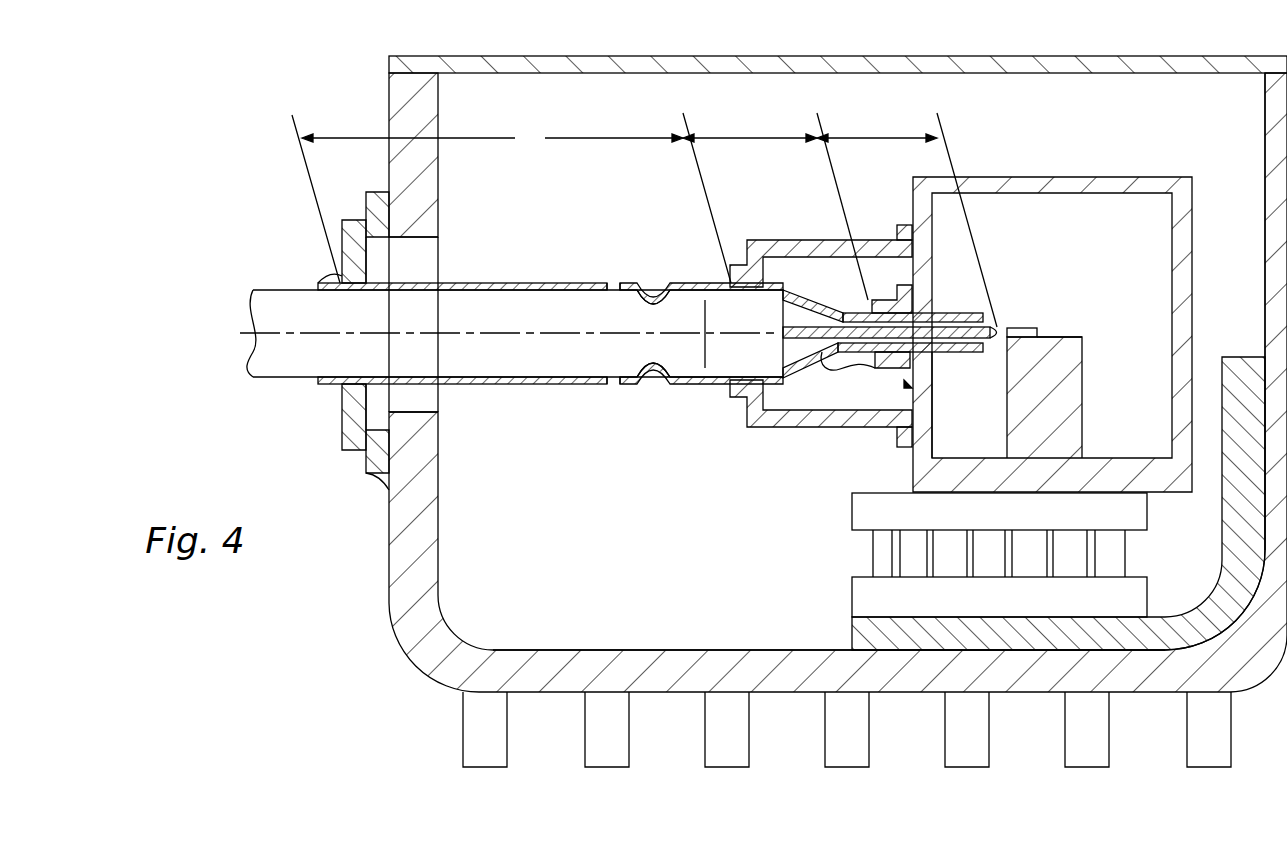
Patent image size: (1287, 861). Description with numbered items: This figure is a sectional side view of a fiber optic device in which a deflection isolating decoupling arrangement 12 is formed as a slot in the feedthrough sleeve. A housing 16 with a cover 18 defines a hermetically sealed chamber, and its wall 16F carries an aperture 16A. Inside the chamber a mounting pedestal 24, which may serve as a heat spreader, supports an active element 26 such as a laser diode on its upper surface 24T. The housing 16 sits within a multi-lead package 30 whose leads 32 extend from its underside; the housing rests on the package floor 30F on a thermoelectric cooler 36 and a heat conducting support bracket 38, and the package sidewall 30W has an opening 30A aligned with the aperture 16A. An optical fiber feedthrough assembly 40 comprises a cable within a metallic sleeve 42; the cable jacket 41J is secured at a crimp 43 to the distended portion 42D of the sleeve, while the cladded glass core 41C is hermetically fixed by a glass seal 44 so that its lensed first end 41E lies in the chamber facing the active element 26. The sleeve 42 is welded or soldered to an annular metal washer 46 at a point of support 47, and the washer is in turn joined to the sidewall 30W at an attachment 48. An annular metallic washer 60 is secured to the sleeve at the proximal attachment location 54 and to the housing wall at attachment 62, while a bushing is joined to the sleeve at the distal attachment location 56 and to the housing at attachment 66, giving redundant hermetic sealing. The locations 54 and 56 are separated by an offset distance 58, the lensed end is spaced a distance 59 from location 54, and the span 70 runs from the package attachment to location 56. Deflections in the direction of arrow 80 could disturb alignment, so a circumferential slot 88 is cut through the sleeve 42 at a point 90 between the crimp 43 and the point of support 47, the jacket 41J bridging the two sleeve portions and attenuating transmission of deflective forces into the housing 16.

The deflection isolating decoupling arrangement 12 is at (636, 218).
The housing 16 is at (1208, 248).
The aperture 16A is at (935, 363).
The wall 16F is at (930, 431).
The cover 18 is at (1062, 178).
The mounting pedestal 24 is at (1057, 403).
The upper surface 24T is at (1078, 337).
The active element 26 is at (1030, 328).
The package 30 is at (782, 374).
The opening 30A is at (430, 400).
The floor 30F is at (607, 677).
The sidewall 30W is at (440, 540).
The leads 32 is at (417, 738).
The thermoelectric cooler 36 is at (845, 551).
The heat conducting support bracket 38 is at (850, 635).
The optical fiber feedthrough assembly 40 is at (643, 402).
The cladded glass core 41C is at (823, 347).
The first end 41E is at (990, 326).
The jacket 41J is at (720, 357).
The metallic sleeve 42 is at (497, 274).
The distended portion 42D is at (700, 281).
The crimp 43 is at (652, 368).
The glass seal 44 is at (952, 349).
The annular metal washer 46 is at (352, 440).
The point of support 47 is at (338, 390).
The attachment 48 is at (380, 474).
The first, proximal, attachment location 54 is at (866, 306).
The second, distal, attachment location 56 is at (727, 253).
The offset distance 58 is at (775, 136).
The distance 59 is at (896, 136).
The annular metallic washer 60 is at (893, 363).
The attachment 62 is at (905, 386).
The attachment 66 is at (906, 449).
The span 70 is at (511, 198).
The reference arrow 80 is at (165, 315).
The circumferential slot 88 is at (607, 272).
The point 90 is at (605, 254).